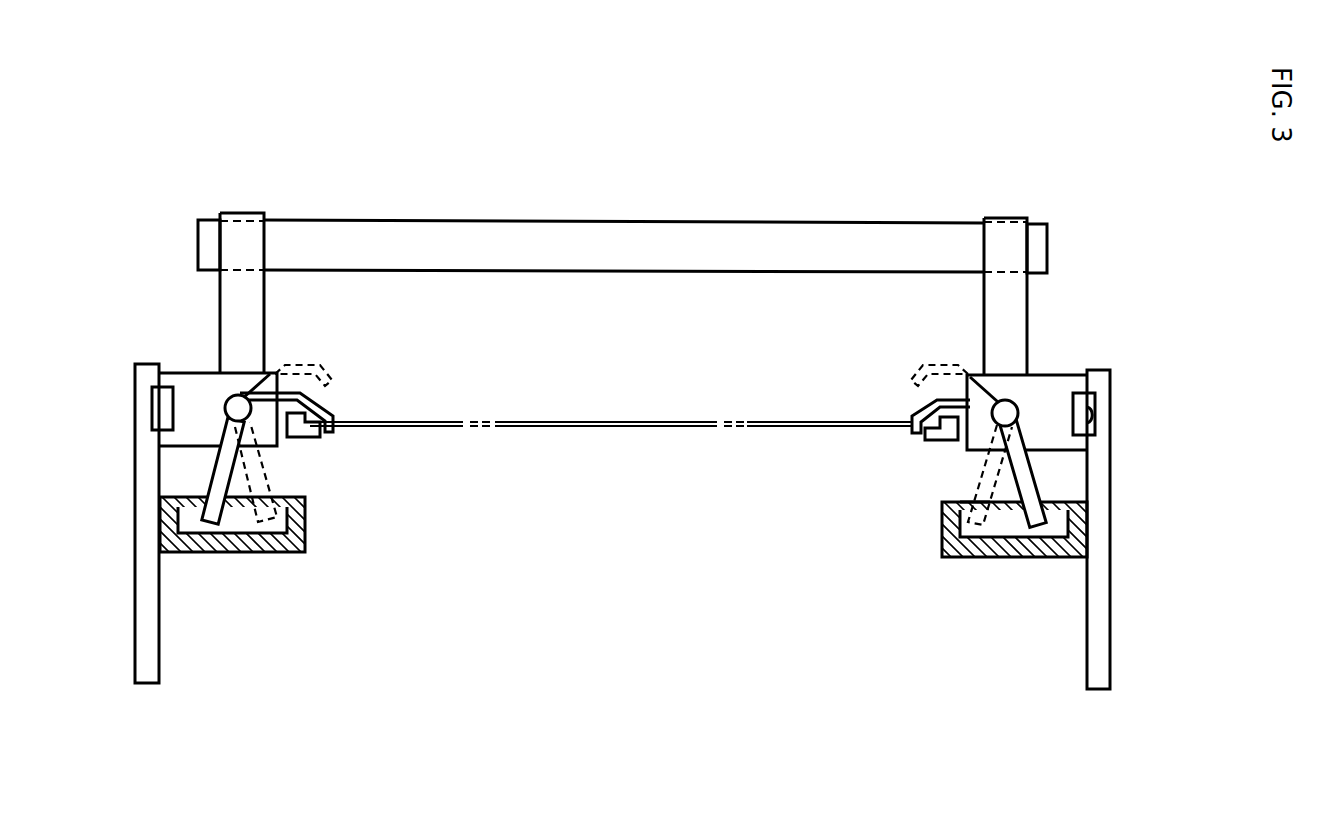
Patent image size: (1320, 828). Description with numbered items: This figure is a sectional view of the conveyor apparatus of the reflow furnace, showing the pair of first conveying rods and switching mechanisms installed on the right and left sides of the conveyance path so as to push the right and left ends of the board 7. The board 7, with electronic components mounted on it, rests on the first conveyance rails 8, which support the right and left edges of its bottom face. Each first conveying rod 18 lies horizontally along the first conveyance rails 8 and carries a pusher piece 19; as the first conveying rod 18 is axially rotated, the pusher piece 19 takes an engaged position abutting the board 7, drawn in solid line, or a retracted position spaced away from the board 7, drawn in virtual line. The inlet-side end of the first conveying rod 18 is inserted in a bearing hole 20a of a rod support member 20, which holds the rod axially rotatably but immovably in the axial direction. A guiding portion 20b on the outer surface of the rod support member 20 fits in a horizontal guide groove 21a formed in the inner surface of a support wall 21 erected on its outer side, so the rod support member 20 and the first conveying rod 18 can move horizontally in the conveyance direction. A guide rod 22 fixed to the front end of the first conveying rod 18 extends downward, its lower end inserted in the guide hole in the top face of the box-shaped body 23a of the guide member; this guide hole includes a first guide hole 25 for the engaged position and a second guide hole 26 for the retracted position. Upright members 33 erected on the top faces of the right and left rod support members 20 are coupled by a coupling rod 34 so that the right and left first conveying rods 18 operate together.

The printed circuit board 7 is at (556, 421).
The first conveyance rails 8 is at (943, 443).
The first conveying rod 18 is at (1018, 402).
The pusher piece 19 is at (922, 410).
The rod support member 20 is at (1020, 410).
The bearing hole 20a is at (1086, 378).
The guiding portion 20b is at (1097, 394).
The support wall 21 is at (1112, 461).
The guide groove 21a is at (1093, 427).
The guide rod 22 is at (1040, 478).
The body 23a is at (943, 532).
The first guide hole 25 is at (1048, 494).
The second guide hole 26 is at (963, 498).
The upright member 33 is at (984, 316).
The coupling rod 34 is at (623, 222).